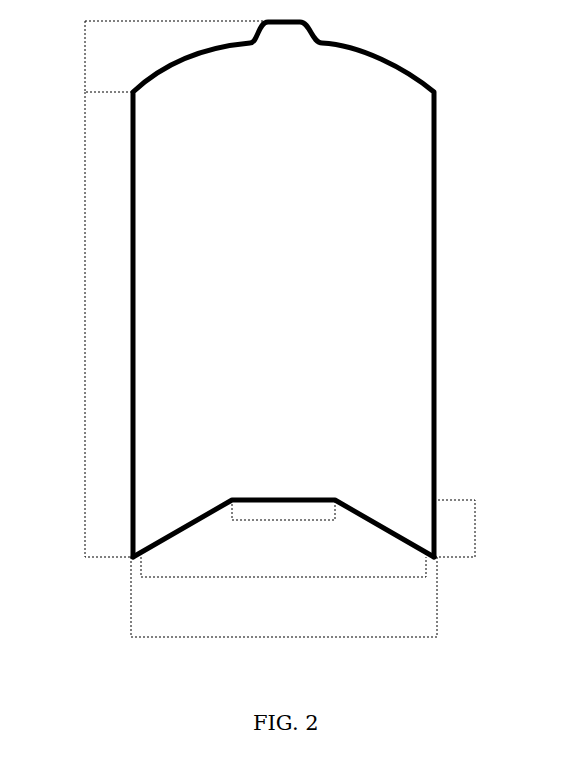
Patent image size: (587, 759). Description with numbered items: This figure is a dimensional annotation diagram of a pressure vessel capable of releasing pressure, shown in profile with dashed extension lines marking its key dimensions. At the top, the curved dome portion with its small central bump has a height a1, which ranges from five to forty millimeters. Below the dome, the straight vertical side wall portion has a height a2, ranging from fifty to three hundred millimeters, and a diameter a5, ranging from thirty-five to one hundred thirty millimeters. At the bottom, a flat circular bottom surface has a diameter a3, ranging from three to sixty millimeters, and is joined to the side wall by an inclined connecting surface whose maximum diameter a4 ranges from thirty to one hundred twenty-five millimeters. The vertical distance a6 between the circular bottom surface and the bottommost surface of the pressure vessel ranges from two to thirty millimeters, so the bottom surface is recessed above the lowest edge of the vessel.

The height of the dome portion a1 is at (174, 56).
The height of the side wall portion a2 is at (87, 324).
The diameter of the circular bottom surface a3 is at (283, 524).
The maximum diameter of the inclined connecting surface a4 is at (283, 583).
The diameter of the side wall portion a5 is at (284, 613).
The distance between the circular bottom surface and the bottommost surface a6 is at (476, 528).